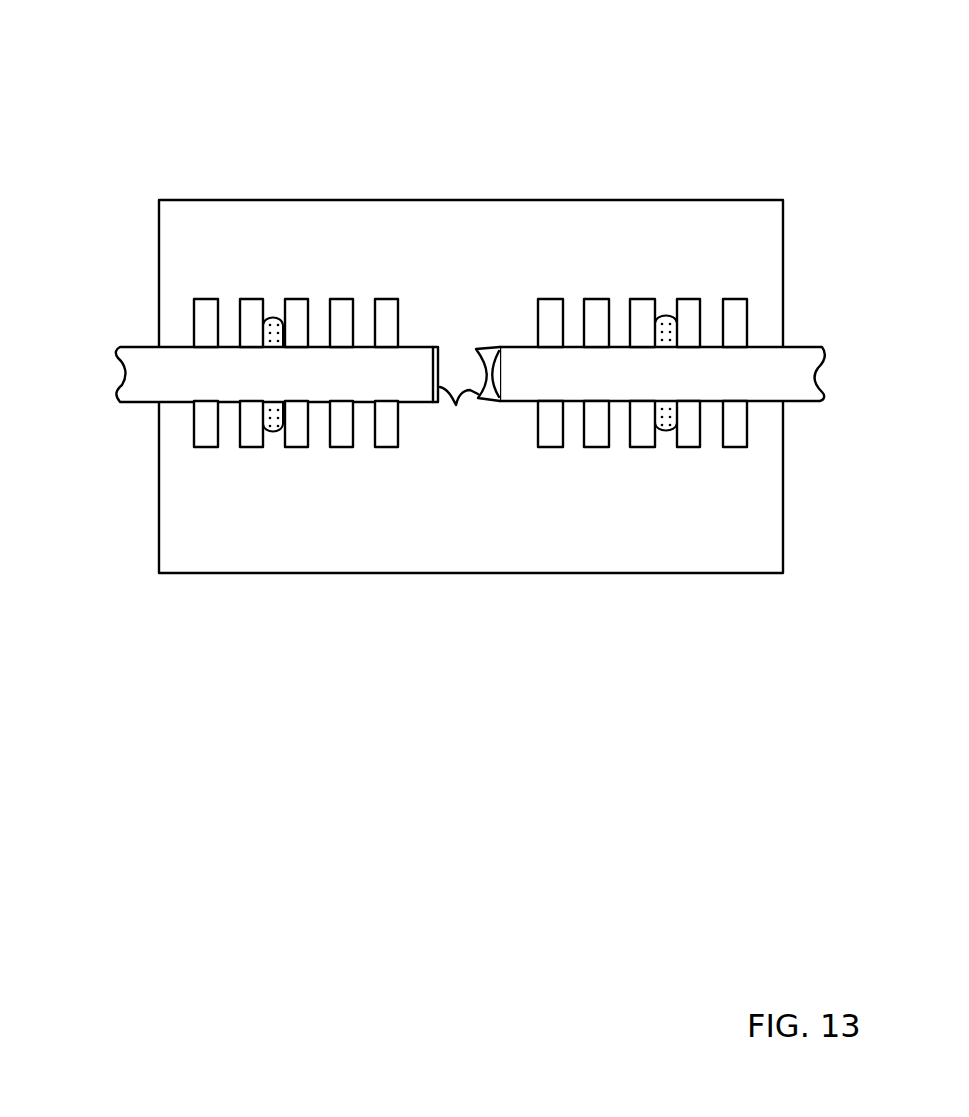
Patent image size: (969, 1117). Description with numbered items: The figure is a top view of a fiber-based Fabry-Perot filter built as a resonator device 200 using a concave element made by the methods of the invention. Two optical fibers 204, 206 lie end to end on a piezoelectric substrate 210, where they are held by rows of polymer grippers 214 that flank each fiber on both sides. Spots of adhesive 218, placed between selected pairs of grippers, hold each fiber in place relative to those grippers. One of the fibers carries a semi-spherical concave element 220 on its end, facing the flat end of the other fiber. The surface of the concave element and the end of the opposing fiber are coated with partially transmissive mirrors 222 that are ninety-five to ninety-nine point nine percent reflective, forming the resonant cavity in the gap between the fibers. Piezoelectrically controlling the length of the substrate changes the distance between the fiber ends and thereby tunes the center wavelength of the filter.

The resonator device 200 is at (136, 96).
The optical fiber 204 is at (135, 360).
The optical fiber 206 is at (793, 363).
The piezoelectric substrate 210 is at (212, 532).
The polymer grippers 214 is at (640, 435).
The spots of adhesive 218 is at (664, 313).
The concave element 220 is at (490, 345).
The partially transmissive mirrors 222 is at (456, 405).